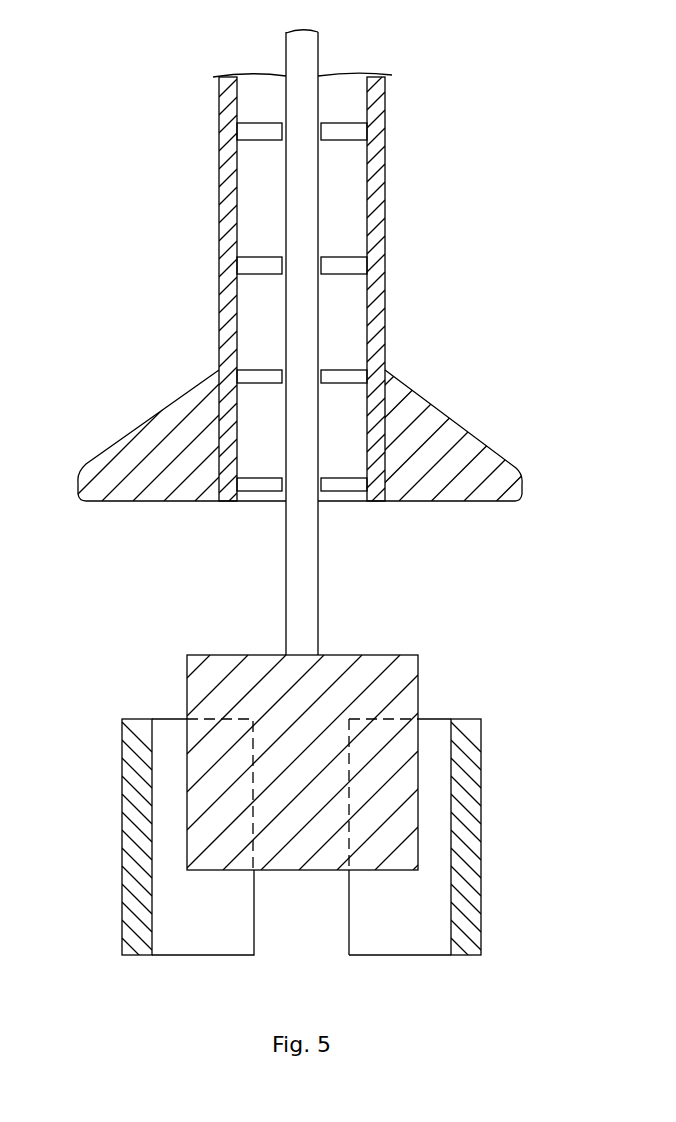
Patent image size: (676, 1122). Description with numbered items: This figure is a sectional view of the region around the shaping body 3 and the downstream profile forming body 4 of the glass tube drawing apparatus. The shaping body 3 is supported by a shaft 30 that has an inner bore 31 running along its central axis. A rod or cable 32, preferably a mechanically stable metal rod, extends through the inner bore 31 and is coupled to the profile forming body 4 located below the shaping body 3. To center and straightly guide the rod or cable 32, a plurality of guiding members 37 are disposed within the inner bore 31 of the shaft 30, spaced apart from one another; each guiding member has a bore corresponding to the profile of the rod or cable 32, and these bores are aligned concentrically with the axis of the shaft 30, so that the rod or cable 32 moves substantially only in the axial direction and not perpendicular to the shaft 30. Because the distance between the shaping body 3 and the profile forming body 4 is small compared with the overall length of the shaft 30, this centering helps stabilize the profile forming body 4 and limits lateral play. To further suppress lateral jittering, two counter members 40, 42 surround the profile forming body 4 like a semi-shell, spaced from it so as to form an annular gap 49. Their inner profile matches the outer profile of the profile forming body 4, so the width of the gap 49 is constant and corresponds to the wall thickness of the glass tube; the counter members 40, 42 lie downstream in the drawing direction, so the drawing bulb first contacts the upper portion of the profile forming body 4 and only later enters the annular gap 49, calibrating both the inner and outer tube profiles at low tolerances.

The shaping body 3 is at (472, 446).
The profile forming body 4 is at (412, 670).
The shaft 30 is at (378, 120).
The inner bore 31 is at (348, 192).
The rod or cable 32 is at (310, 49).
The guiding members 37 is at (360, 265).
The counter member 40 is at (128, 794).
The counter member 42 is at (475, 813).
The annular gap 49 is at (430, 733).